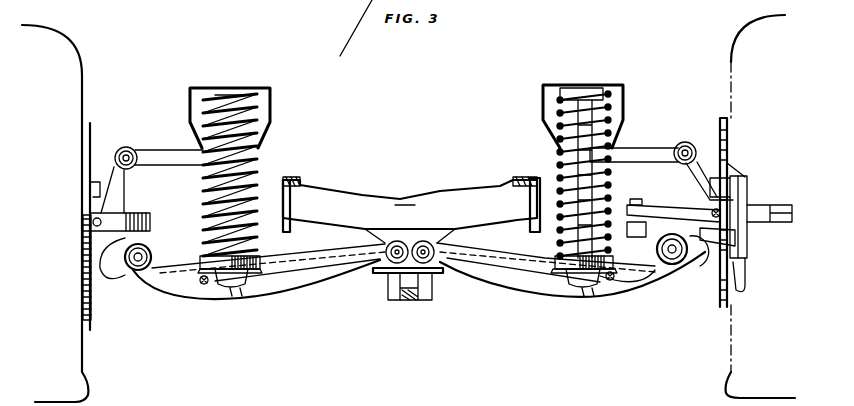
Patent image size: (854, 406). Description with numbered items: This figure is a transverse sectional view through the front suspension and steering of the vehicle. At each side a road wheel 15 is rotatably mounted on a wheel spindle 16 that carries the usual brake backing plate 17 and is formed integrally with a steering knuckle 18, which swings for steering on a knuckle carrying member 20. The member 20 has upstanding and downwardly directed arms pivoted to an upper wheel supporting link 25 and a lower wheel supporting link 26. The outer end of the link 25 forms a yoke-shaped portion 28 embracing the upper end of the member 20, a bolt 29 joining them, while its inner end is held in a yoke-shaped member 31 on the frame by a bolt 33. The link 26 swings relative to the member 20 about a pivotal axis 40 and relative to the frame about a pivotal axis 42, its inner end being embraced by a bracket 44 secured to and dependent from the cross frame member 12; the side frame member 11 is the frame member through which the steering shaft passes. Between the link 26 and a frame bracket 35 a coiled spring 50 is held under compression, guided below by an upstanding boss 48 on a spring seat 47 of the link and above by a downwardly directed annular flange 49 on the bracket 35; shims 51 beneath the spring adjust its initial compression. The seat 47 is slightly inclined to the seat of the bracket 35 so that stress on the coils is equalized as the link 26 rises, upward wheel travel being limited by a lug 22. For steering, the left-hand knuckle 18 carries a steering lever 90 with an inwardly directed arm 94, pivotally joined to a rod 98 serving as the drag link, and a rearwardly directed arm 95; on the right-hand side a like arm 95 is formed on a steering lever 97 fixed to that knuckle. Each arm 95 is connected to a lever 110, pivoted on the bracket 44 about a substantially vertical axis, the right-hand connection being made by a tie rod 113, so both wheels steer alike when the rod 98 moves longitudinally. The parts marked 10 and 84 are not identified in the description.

The frame end block 10 is at (291, 182).
The side frame member 11 is at (519, 177).
The cross frame member 12 is at (405, 199).
The road wheel 15 is at (82, 70).
The wheel spindle 16 is at (782, 226).
The brake backing plate 17 is at (83, 272).
The steering knuckle 18 is at (742, 180).
The knuckle carrying member 20 is at (123, 190).
The lug 22 is at (233, 290).
The upper wheel supporting link 25 is at (170, 150).
The lower wheel supporting link 26 is at (271, 292).
The yoke-shaped portion 28 is at (128, 147).
The bolt 29 is at (116, 158).
The yoke-shaped member 31 is at (560, 126).
The bolt 33 is at (256, 160).
The bracket 35 is at (271, 103).
The pivotal axis 40 is at (136, 272).
The pivotal axis 42 is at (430, 296).
The bracket 44 is at (385, 275).
The spring seat 47 is at (262, 268).
The upstanding boss 48 is at (203, 256).
The annular flange 49 is at (220, 92).
The coiled spring 50 is at (204, 200).
The shims 51 is at (204, 285).
The tie rod 84 is at (205, 277).
The steering lever 90 is at (721, 212).
The inwardly directed arm 94 is at (650, 205).
The rearwardly directed arm 95 is at (702, 240).
The steering lever 97 is at (92, 223).
The rod 98 is at (635, 237).
The lever 110 is at (412, 300).
The tie rod 113 is at (317, 282).